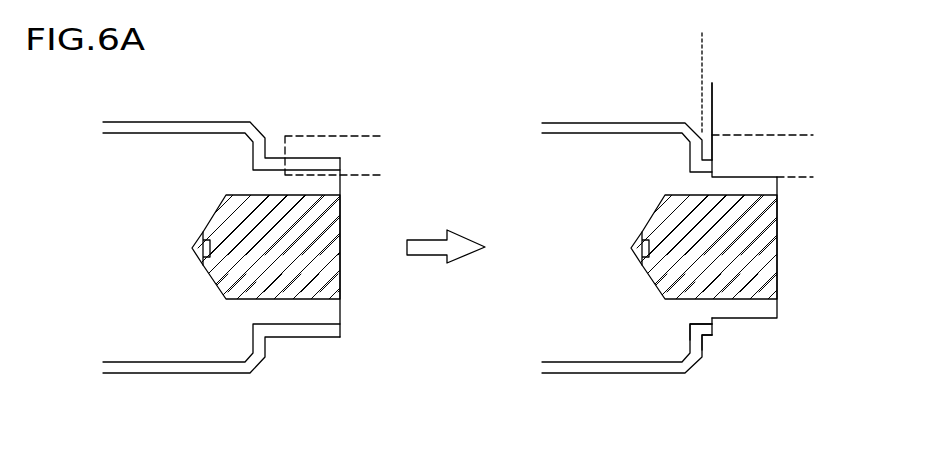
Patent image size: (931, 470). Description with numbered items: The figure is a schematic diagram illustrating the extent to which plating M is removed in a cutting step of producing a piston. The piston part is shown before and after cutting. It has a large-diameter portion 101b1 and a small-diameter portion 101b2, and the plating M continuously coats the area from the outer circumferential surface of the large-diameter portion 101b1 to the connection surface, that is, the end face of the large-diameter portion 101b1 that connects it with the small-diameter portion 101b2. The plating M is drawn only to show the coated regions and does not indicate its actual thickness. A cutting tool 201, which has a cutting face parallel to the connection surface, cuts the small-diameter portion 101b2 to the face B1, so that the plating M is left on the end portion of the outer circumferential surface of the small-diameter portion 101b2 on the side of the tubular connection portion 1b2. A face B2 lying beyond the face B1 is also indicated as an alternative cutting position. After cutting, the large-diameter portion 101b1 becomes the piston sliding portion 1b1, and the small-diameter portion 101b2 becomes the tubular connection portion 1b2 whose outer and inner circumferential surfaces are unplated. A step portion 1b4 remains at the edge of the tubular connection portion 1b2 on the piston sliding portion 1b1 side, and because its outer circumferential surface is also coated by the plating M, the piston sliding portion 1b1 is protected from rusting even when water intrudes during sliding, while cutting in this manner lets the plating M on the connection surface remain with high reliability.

The plating M is at (185, 122).
The cutting tool 201 is at (337, 145).
The large-diameter portion 101b1 is at (407, 373).
The piston sliding portion 1b1 is at (127, 337).
The small-diameter portion 101b2 is at (489, 245).
The tubular connection portion 1b2 is at (298, 308).
The step portion 1b4 is at (707, 330).
The face B1 is at (712, 95).
The face B2 is at (702, 38).